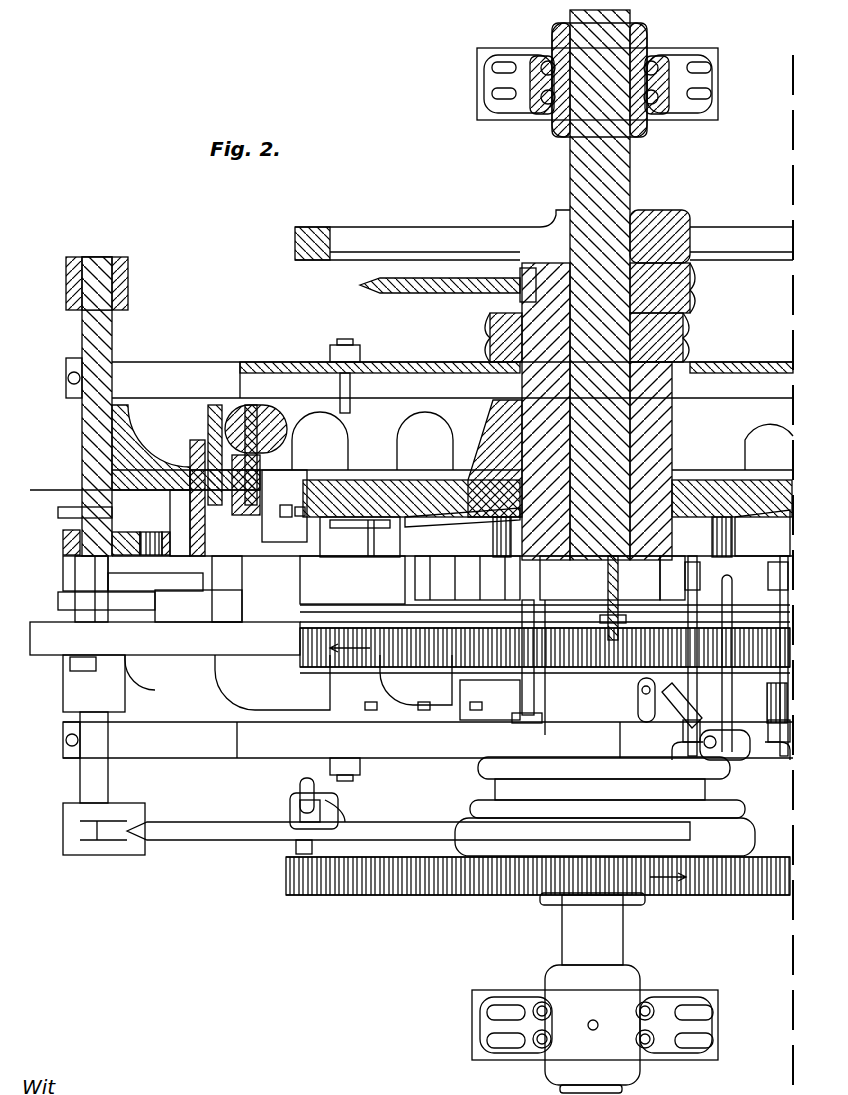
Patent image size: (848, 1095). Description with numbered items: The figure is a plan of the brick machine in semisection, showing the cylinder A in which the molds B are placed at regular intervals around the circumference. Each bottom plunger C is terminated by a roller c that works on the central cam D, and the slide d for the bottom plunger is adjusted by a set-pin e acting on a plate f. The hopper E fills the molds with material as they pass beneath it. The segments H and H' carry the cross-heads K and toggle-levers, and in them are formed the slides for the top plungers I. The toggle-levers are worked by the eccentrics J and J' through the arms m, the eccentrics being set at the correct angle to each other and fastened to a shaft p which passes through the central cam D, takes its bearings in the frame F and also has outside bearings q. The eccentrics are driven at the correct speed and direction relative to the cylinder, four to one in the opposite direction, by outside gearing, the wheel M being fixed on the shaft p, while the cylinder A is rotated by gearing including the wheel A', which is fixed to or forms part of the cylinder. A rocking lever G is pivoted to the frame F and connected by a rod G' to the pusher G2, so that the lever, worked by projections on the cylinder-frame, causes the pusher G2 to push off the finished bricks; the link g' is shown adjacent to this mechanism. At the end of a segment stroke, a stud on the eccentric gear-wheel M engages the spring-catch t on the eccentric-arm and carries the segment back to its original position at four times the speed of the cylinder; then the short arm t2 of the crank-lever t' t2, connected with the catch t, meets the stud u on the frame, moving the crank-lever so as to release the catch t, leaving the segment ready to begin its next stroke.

The shaft p is at (598, 94).
The outside bearings q is at (686, 32).
The wheel M is at (338, 236).
The arm m is at (128, 292).
The cross-head K is at (112, 345).
The frame F is at (428, 558).
The stud u is at (360, 350).
The segment H' is at (452, 562).
The wheel A' is at (545, 558).
The cylinder A is at (452, 518).
The eccentric J is at (605, 533).
The eccentric J' is at (604, 556).
The central cam D is at (577, 411).
The set-pin e is at (257, 473).
The top plunger I is at (136, 531).
The segment H is at (165, 638).
The bottom plunger C is at (360, 537).
The slide d is at (405, 525).
The roller c is at (612, 537).
The plate f is at (370, 540).
The mold B is at (285, 595).
The hopper E is at (586, 645).
The pusher G2 is at (736, 633).
The rod G' is at (722, 663).
The link g' is at (670, 704).
The rocking lever G is at (731, 767).
The short arm t2 is at (292, 786).
The crank-lever t' is at (301, 810).
The spring-catch t is at (285, 852).